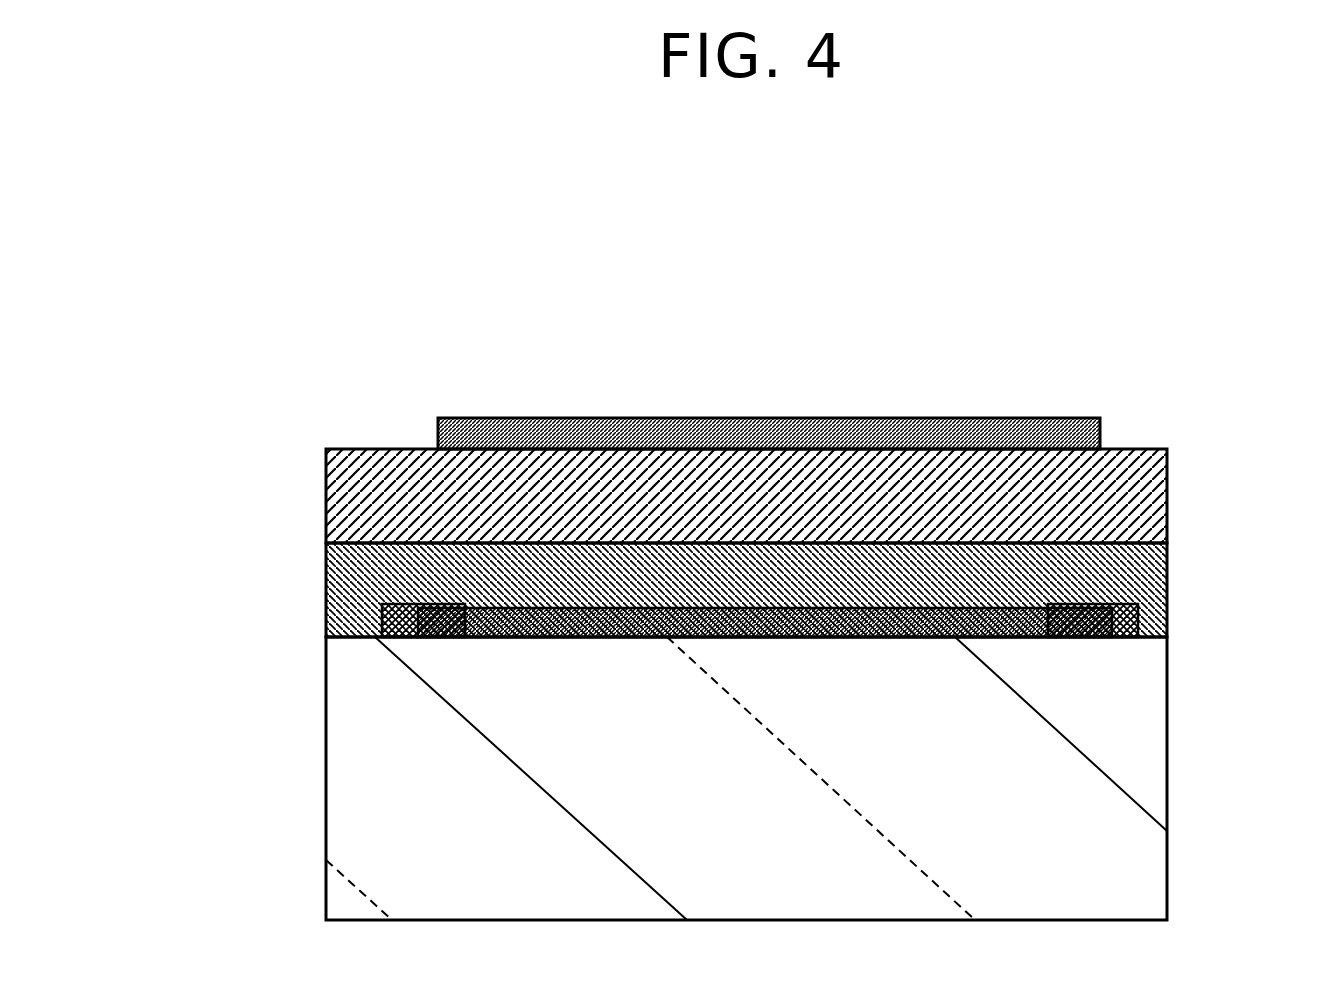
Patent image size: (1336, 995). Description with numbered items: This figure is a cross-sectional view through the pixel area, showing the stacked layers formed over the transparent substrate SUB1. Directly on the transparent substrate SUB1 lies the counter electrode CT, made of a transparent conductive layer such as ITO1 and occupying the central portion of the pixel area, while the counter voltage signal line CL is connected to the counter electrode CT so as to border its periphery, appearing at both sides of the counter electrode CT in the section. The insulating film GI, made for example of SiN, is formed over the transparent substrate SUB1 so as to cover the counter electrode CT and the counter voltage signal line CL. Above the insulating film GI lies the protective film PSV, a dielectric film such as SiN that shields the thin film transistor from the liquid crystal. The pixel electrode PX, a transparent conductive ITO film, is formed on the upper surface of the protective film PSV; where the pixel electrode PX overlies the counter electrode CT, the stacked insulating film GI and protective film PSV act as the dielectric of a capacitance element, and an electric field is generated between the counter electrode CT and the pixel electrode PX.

The pixel electrode PX is at (602, 418).
The protective film PSV is at (325, 487).
The insulating film GI is at (1143, 575).
The counter voltage signal line CL is at (420, 637).
The counter electrode CT is at (782, 638).
The transparent substrate SUB1 is at (1137, 742).